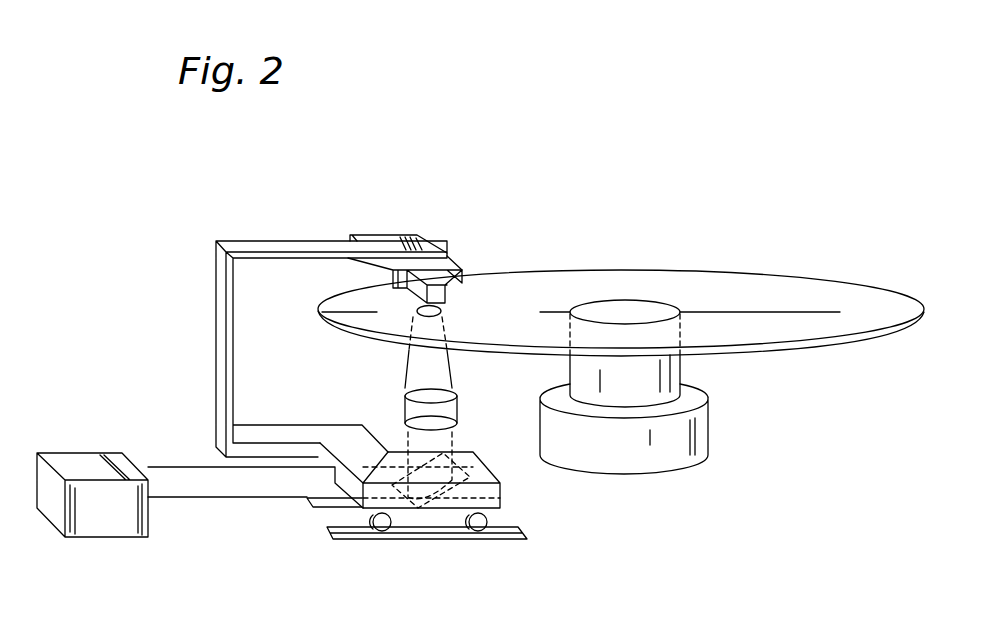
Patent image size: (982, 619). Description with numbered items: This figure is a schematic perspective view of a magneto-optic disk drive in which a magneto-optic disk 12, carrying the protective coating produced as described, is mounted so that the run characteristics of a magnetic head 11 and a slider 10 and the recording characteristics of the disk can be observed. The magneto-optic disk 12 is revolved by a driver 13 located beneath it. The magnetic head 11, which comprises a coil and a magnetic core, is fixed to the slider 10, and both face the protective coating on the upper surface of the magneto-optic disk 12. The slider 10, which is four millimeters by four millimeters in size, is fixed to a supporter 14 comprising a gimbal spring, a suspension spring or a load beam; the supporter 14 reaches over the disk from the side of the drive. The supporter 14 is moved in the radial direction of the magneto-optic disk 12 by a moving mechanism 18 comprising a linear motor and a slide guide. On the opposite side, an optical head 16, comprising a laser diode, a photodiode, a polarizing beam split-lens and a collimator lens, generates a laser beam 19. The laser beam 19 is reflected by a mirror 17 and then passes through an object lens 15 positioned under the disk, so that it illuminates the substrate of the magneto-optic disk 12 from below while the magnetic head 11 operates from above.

The slider 10 is at (391, 234).
The magnetic head 11 is at (458, 273).
The magneto-optic disk 12 is at (728, 292).
The driver 13 is at (693, 437).
The supporter 14 is at (300, 240).
The object lens 15 is at (403, 410).
The optical head 16 is at (93, 458).
The mirror 17 is at (453, 468).
The moving mechanism 18 is at (502, 493).
The laser beam 19 is at (225, 499).